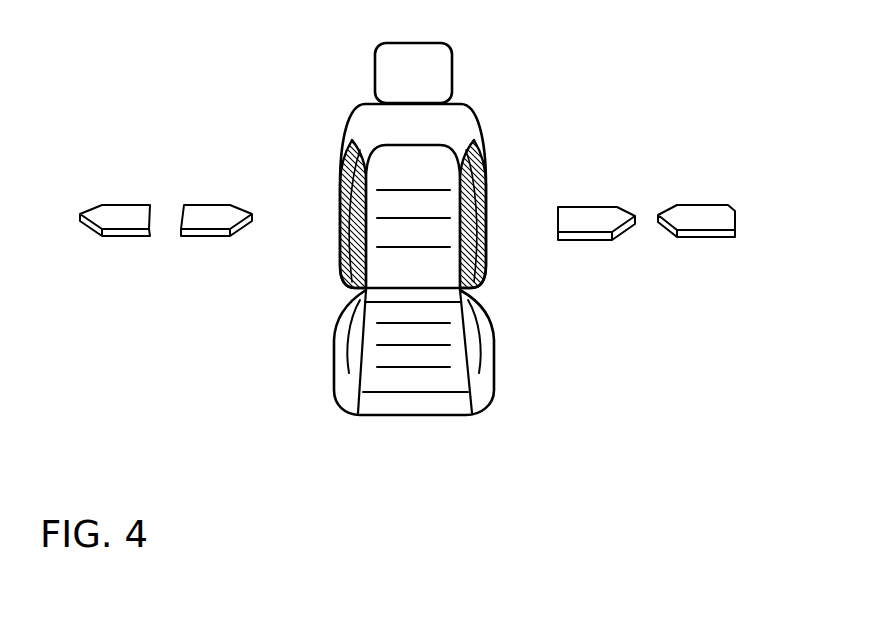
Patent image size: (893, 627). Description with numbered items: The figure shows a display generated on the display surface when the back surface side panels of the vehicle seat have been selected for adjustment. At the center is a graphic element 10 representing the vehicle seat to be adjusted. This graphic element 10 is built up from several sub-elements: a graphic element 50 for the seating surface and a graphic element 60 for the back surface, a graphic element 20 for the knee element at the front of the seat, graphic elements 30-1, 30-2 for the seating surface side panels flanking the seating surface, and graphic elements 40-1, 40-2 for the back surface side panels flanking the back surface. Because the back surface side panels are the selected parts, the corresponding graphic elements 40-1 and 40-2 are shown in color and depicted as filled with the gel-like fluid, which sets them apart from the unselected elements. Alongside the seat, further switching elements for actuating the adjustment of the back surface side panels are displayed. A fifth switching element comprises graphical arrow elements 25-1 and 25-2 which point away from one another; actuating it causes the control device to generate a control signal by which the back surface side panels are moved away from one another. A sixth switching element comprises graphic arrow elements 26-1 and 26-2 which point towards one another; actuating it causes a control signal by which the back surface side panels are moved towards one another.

The graphic element of the vehicle seat 10 is at (301, 57).
The graphic element for the knee element 20 is at (453, 405).
The graphical arrow element 25-1 is at (209, 217).
The graphical arrow element 25-2 is at (121, 217).
The graphic arrow element 26-1 is at (595, 217).
The graphic arrow element 26-2 is at (706, 217).
The graphic element for the seating surface side panel 30-1 is at (483, 356).
The graphic element for the seating surface side panel 30-2 is at (343, 356).
The graphic element for the back surface side panel 40-1 is at (477, 250).
The graphic element for the back surface side panel 40-2 is at (353, 187).
The graphic element for the seating surface 50 is at (413, 368).
The graphic element for the back surface 60 is at (423, 183).